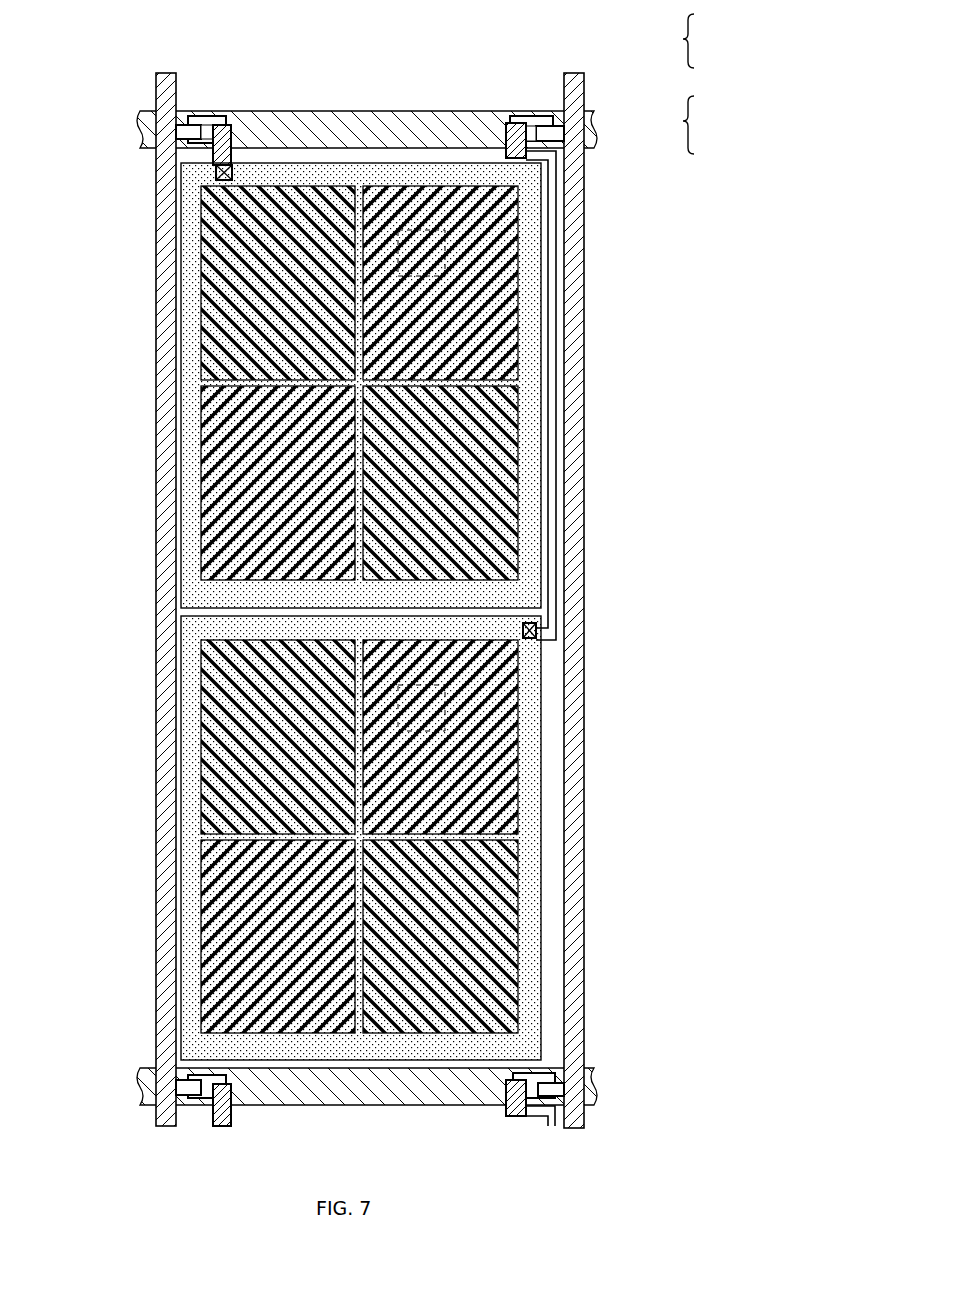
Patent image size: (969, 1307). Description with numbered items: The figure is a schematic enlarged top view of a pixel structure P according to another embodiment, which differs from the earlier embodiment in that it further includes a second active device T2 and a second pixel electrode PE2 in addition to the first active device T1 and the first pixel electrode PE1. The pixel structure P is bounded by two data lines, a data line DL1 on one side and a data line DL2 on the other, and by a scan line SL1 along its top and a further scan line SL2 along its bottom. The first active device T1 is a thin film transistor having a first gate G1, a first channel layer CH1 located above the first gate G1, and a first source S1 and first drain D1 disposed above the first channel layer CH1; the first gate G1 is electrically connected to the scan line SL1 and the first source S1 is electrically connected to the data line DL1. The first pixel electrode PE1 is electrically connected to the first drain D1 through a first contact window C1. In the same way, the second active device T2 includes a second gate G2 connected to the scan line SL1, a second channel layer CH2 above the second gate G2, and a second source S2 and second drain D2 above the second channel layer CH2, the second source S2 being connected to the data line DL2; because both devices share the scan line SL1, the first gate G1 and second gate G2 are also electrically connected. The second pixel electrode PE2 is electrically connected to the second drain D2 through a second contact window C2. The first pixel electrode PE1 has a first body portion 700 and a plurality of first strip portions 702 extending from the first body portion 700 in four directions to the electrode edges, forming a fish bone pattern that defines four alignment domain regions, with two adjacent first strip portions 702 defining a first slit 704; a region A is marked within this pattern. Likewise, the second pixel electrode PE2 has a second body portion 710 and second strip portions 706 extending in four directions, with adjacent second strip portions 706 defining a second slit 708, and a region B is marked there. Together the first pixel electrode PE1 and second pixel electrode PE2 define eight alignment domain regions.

The pixel structure P is at (408, 591).
The data line DL1 is at (162, 65).
The data line DL2 is at (567, 65).
The scan line SL1 is at (145, 116).
The second scan line SL2 is at (145, 1074).
The first active device T1 is at (238, 92).
The first source S1 is at (173, 118).
The first gate G1 is at (197, 108).
The first channel layer CH1 is at (201, 120).
The first drain D1 is at (256, 110).
The first contact window C1 is at (226, 159).
The second active device T2 is at (503, 91).
The second source S2 is at (550, 118).
The second gate G2 is at (524, 108).
The second channel layer CH2 is at (520, 120).
The second drain D2 is at (540, 52).
The second contact window C2 is at (530, 625).
The first pixel electrode PE1 is at (414, 324).
The first body portion 700 is at (350, 184).
The first strip portions 702 is at (510, 238).
The first slit 704 is at (502, 268).
The region A is at (513, 218).
The second pixel electrode PE2 is at (408, 880).
The second strip portions 706 is at (406, 1035).
The second body portion 710 is at (350, 1025).
The second slit 708 is at (440, 1025).
The region B is at (515, 674).